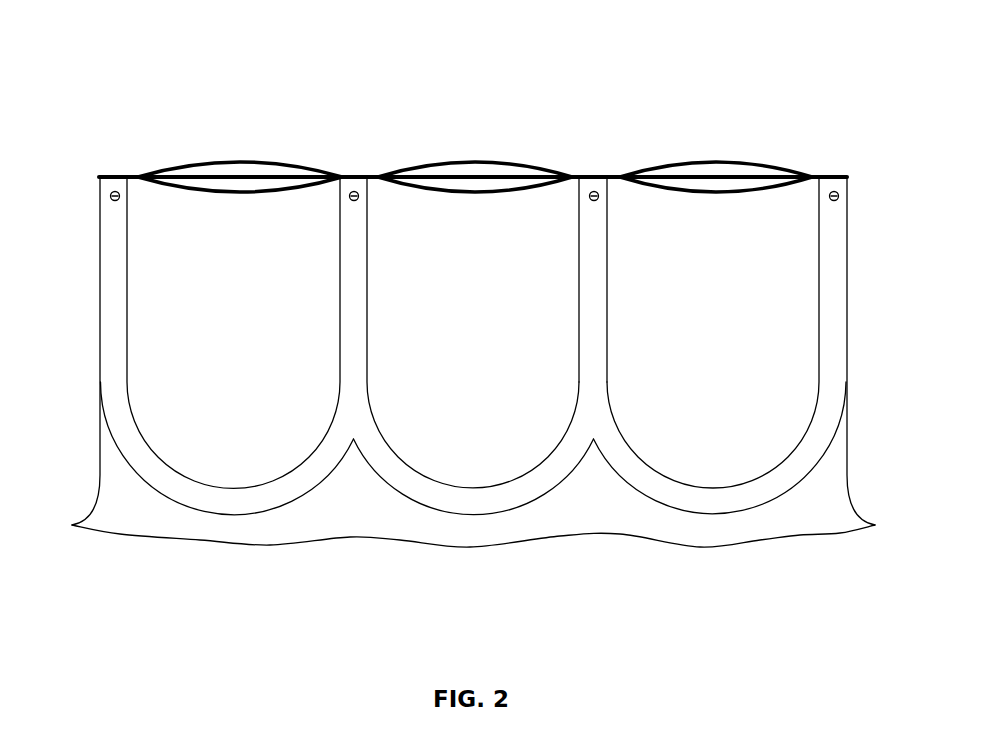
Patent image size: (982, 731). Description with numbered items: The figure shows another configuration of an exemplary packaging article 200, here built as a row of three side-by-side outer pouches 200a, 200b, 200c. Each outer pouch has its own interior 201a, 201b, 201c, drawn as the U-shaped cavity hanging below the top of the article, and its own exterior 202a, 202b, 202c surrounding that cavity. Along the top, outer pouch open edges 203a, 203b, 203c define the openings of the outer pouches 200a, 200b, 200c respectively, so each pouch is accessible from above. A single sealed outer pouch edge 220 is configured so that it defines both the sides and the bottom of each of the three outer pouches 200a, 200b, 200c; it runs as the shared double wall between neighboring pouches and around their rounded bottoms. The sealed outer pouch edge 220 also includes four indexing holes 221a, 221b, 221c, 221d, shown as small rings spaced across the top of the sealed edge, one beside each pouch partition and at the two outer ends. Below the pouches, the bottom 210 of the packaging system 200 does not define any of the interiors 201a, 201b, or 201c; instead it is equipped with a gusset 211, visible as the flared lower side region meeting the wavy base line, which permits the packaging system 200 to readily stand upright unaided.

The packaging article 200 is at (108, 36).
The outer pouch 200a is at (206, 468).
The outer pouch 200b is at (431, 468).
The outer pouch 200c is at (700, 468).
The interior 201a is at (187, 183).
The interior 201b is at (427, 183).
The interior 201c is at (695, 190).
The exterior 202a is at (267, 447).
The exterior 202b is at (490, 447).
The exterior 202c is at (760, 447).
The outer pouch open edge 203a is at (228, 162).
The outer pouch open edge 203b is at (463, 161).
The outer pouch open edge 203c is at (705, 161).
The bottom 210 is at (845, 536).
The gusset 211 is at (853, 493).
The sealed outer pouch edge 220 is at (598, 237).
The indexing hole 221a is at (115, 191).
The indexing hole 221b is at (354, 191).
The indexing hole 221c is at (594, 191).
The indexing hole 221d is at (834, 191).